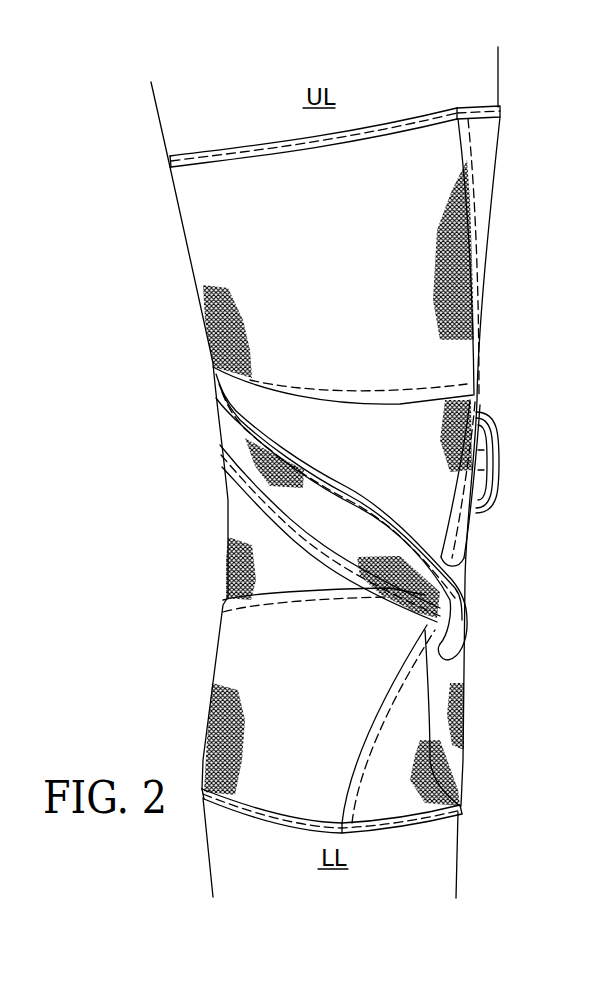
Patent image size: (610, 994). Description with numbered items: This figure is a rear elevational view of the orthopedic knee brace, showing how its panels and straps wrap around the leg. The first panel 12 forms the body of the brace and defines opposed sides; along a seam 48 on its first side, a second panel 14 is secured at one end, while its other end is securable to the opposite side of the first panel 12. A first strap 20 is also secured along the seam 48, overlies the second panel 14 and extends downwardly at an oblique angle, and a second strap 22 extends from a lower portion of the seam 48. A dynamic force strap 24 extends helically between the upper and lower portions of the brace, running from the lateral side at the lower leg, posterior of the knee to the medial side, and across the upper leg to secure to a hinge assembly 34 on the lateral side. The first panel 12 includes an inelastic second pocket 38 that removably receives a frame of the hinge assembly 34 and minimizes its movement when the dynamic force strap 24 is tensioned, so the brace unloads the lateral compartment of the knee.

The first panel 12 is at (420, 792).
The second panel 14 is at (228, 542).
The first strap 20 is at (232, 249).
The second strap 22 is at (257, 715).
The dynamic force strap 24 is at (224, 424).
The hinge assembly 34 is at (501, 447).
The second pocket 38 is at (460, 665).
The seam 48 is at (383, 703).